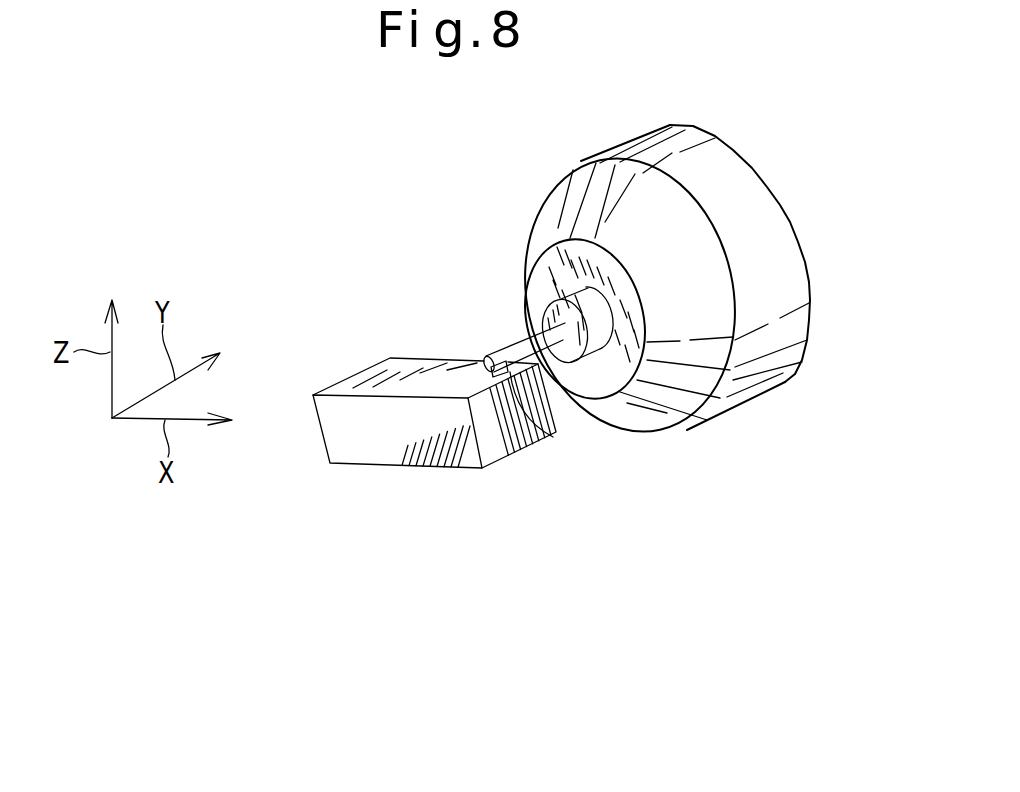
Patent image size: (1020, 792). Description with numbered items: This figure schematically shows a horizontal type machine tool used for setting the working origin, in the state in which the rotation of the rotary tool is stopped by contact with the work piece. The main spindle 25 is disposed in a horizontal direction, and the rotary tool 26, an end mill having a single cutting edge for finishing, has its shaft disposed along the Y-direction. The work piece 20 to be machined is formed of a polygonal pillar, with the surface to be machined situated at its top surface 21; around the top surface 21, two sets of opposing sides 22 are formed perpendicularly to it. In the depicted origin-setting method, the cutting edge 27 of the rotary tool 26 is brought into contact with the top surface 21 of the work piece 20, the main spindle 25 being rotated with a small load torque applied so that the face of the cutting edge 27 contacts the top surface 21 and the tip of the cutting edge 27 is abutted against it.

The work piece 20 is at (428, 447).
The top surface 21 is at (373, 383).
The opposing sides 22 is at (340, 437).
The main spindle 25 is at (777, 229).
The rotary tool 26 is at (518, 341).
The cutting edge 27 is at (545, 437).